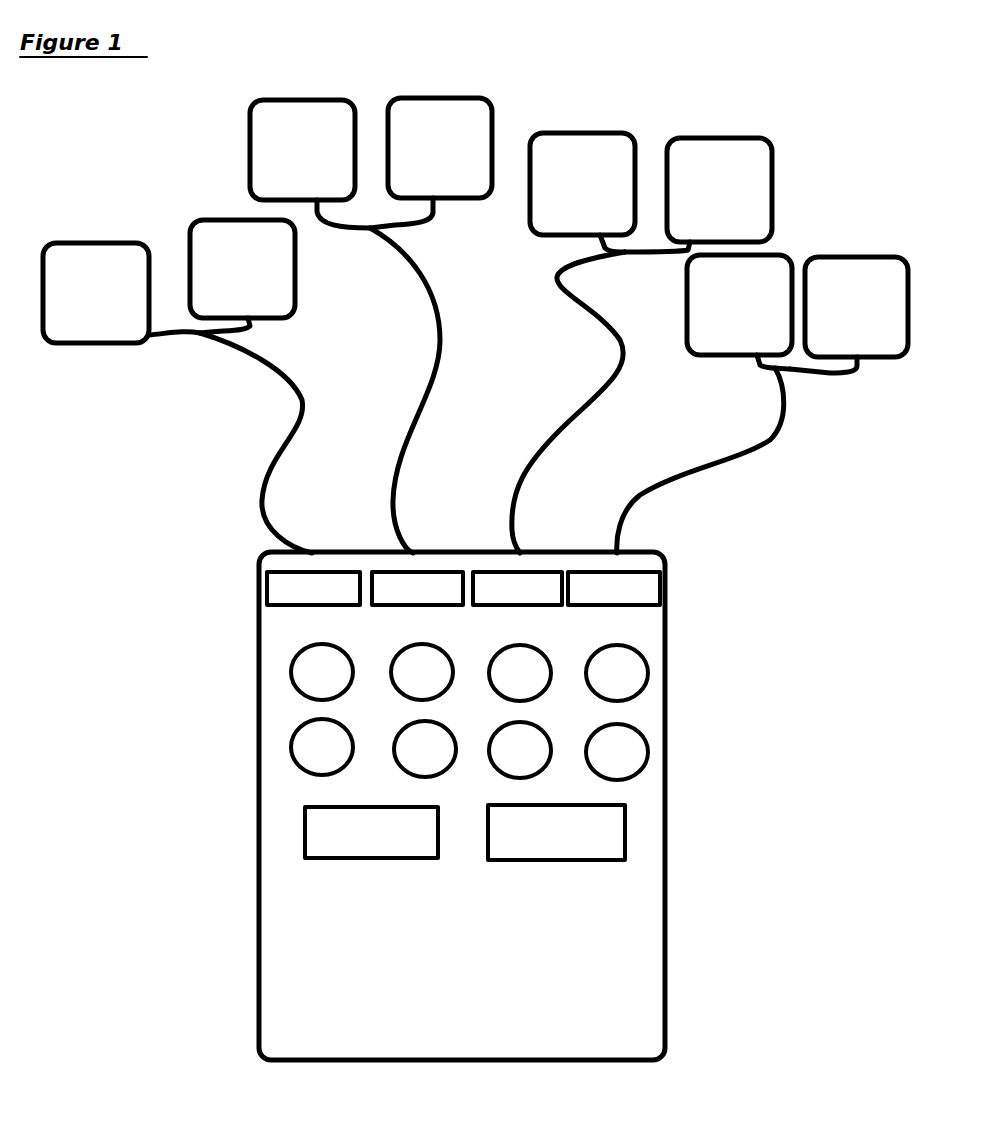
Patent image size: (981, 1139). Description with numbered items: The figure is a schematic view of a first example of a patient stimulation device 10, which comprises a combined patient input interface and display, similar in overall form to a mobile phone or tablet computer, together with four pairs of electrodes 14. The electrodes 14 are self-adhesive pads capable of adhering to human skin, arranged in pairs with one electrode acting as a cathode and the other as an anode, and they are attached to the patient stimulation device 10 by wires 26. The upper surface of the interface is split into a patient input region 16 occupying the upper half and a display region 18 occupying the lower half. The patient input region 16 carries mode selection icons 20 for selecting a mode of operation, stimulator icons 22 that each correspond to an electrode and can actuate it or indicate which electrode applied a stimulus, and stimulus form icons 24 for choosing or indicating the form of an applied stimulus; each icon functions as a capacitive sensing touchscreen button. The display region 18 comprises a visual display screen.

The patient stimulation device 10 is at (170, 670).
The electrodes 14 is at (82, 260).
The patient input region 16 is at (502, 715).
The display region 18 is at (557, 983).
The mode selection icons 20 is at (275, 583).
The stimulator icons 22 is at (298, 746).
The stimulus form icons 24 is at (305, 850).
The wires 26 is at (300, 400).